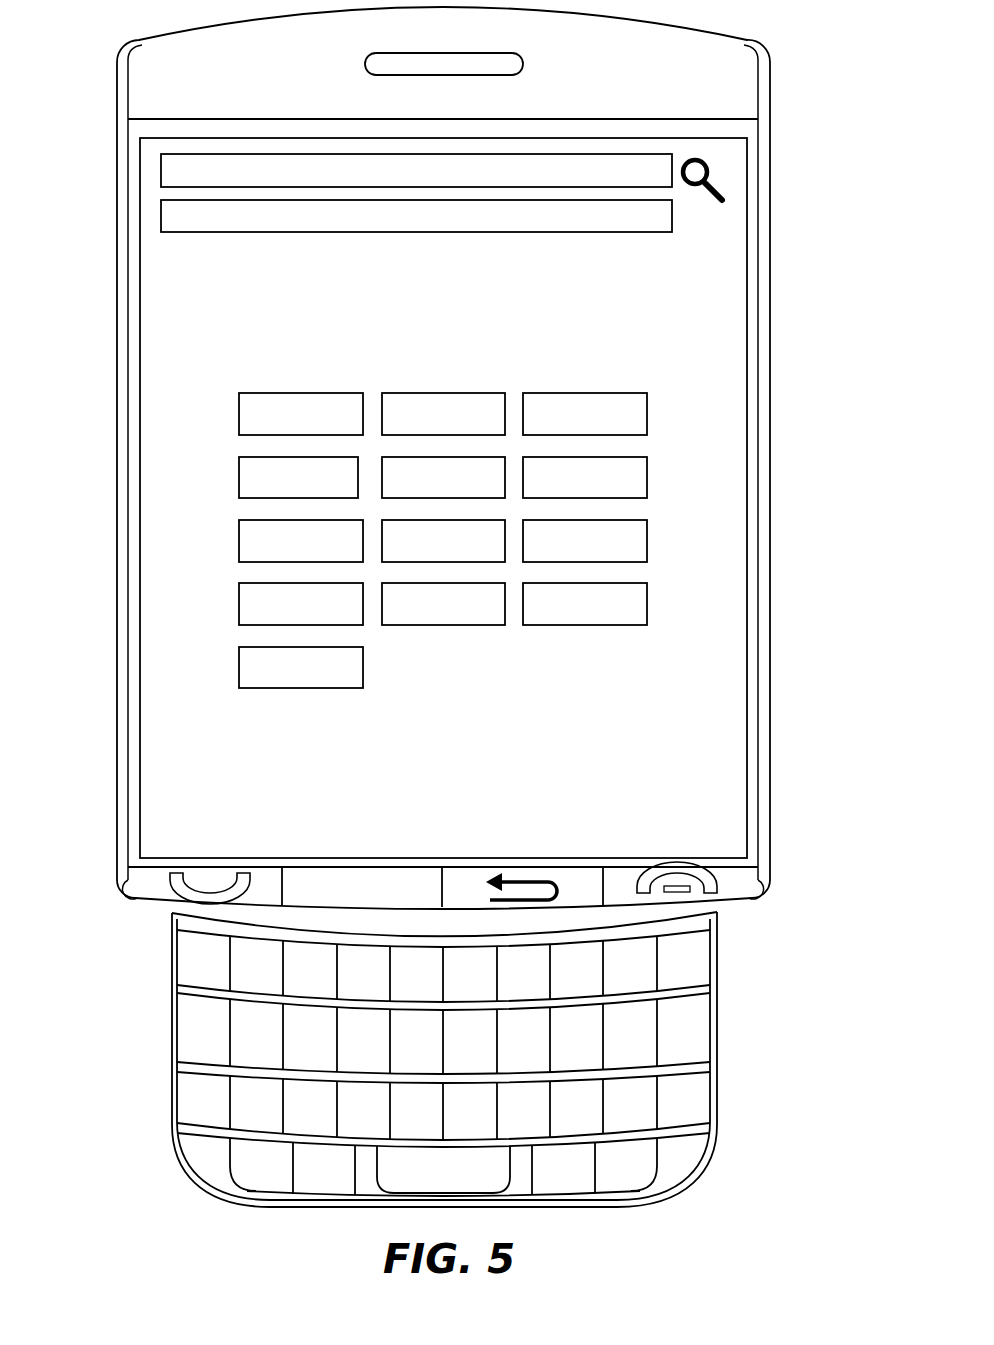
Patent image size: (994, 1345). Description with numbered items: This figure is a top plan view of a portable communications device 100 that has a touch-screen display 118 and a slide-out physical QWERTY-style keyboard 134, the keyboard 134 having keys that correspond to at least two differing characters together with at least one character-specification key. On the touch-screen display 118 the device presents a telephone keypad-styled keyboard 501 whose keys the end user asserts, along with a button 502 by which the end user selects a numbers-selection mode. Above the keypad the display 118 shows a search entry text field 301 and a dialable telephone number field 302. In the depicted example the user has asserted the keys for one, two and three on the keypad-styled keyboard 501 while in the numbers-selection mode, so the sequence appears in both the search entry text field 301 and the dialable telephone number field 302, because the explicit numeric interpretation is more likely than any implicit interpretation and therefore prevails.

The portable communications device 100 is at (190, 34).
The touch-screen display 118 is at (668, 655).
The slide-out physical QWERTY-style keyboard 134 is at (172, 1080).
The search entry text field 301 is at (657, 155).
The dialable telephone number field 302 is at (655, 233).
The telephone keypad-styled keyboard 501 is at (485, 392).
The button 502 is at (257, 690).